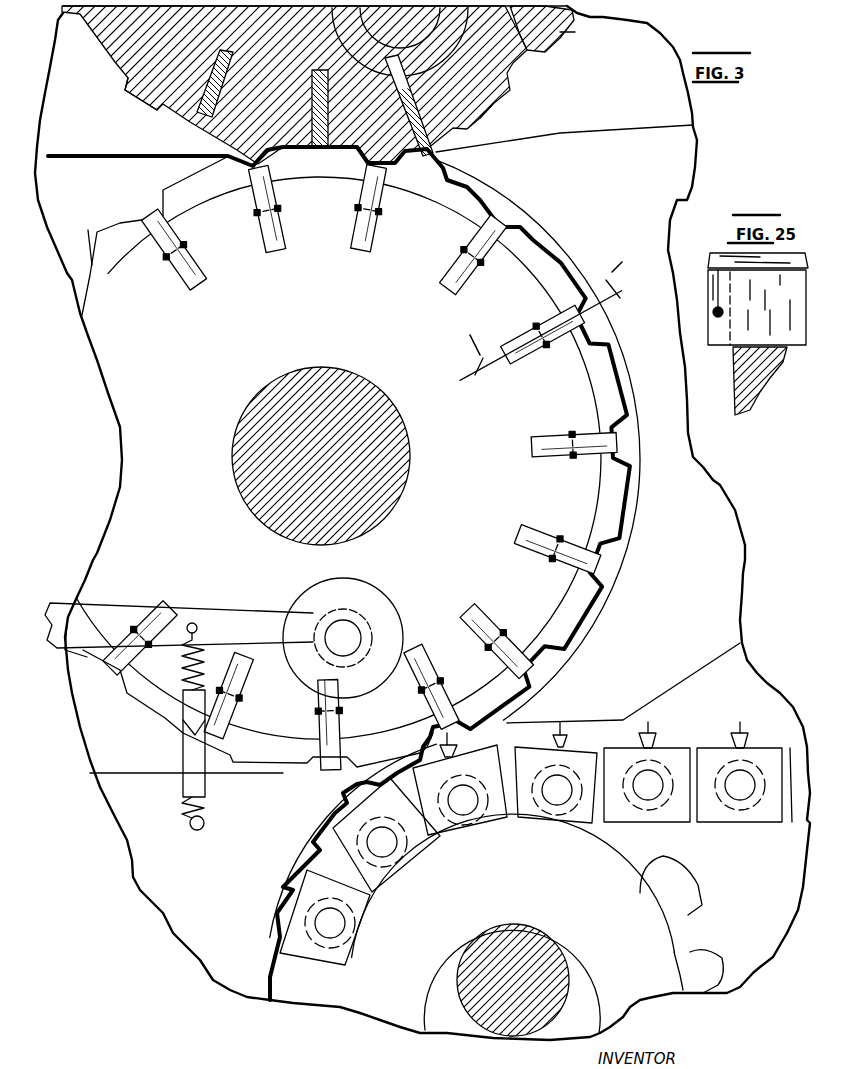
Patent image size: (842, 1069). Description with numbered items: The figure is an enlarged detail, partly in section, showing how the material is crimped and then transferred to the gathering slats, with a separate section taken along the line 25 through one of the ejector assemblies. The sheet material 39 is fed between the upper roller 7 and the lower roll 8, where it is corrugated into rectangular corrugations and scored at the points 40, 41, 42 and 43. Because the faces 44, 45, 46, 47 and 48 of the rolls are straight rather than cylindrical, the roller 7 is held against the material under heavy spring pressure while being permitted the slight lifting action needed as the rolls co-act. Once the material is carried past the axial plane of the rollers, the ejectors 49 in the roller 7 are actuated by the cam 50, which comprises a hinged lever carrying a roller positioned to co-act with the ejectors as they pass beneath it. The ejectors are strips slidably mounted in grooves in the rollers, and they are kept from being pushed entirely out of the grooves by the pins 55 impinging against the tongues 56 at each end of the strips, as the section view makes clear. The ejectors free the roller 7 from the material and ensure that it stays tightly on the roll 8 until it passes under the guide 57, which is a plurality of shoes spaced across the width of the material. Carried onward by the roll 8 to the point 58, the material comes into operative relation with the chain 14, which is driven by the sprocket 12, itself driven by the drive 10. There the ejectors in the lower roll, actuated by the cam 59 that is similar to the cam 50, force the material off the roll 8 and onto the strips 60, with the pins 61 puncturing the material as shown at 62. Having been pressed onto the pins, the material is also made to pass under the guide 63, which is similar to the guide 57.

In FIG. 3, the roller 7 is at (575, 33).
In FIG. 3, the roll 8 is at (339, 458).
In FIG. 25, the roll 8 is at (757, 380).
In FIG. 3, the drive shaft 10 is at (552, 940).
In FIG. 3, the sprocket 12 is at (670, 880).
In FIG. 3, the chain 14 is at (742, 745).
In FIG. 3, the section line 25 is at (538, 308).
In FIG. 3, the material 39 is at (339, 573).
In FIG. 3, the scoring point 40 is at (312, 150).
In FIG. 3, the scoring point 41 is at (300, 180).
In FIG. 3, the scoring point 42 is at (425, 182).
In FIG. 3, the scoring point 43 is at (447, 193).
In FIG. 3, the face 44 is at (500, 108).
In FIG. 3, the face 45 is at (79, 241).
In FIG. 3, the face 46 is at (138, 95).
In FIG. 3, the face 47 is at (115, 62).
In FIG. 3, the face 48 is at (140, 225).
In FIG. 3, the ejector 49 is at (200, 118).
In FIG. 3, the cam 50 is at (437, 43).
In FIG. 3, the pin 55 is at (190, 243).
In FIG. 25, the pin 55 is at (718, 268).
In FIG. 3, the tongue 56 is at (208, 282).
In FIG. 25, the tongue 56 is at (712, 330).
In FIG. 3, the guide 57 is at (422, 523).
In FIG. 3, the point 58 is at (450, 700).
In FIG. 3, the cam 59 is at (360, 612).
In FIG. 3, the strip 60 is at (505, 735).
In FIG. 3, the pin 61 is at (462, 722).
In FIG. 3, the puncture 62 is at (330, 800).
In FIG. 3, the guide 63 is at (258, 744).